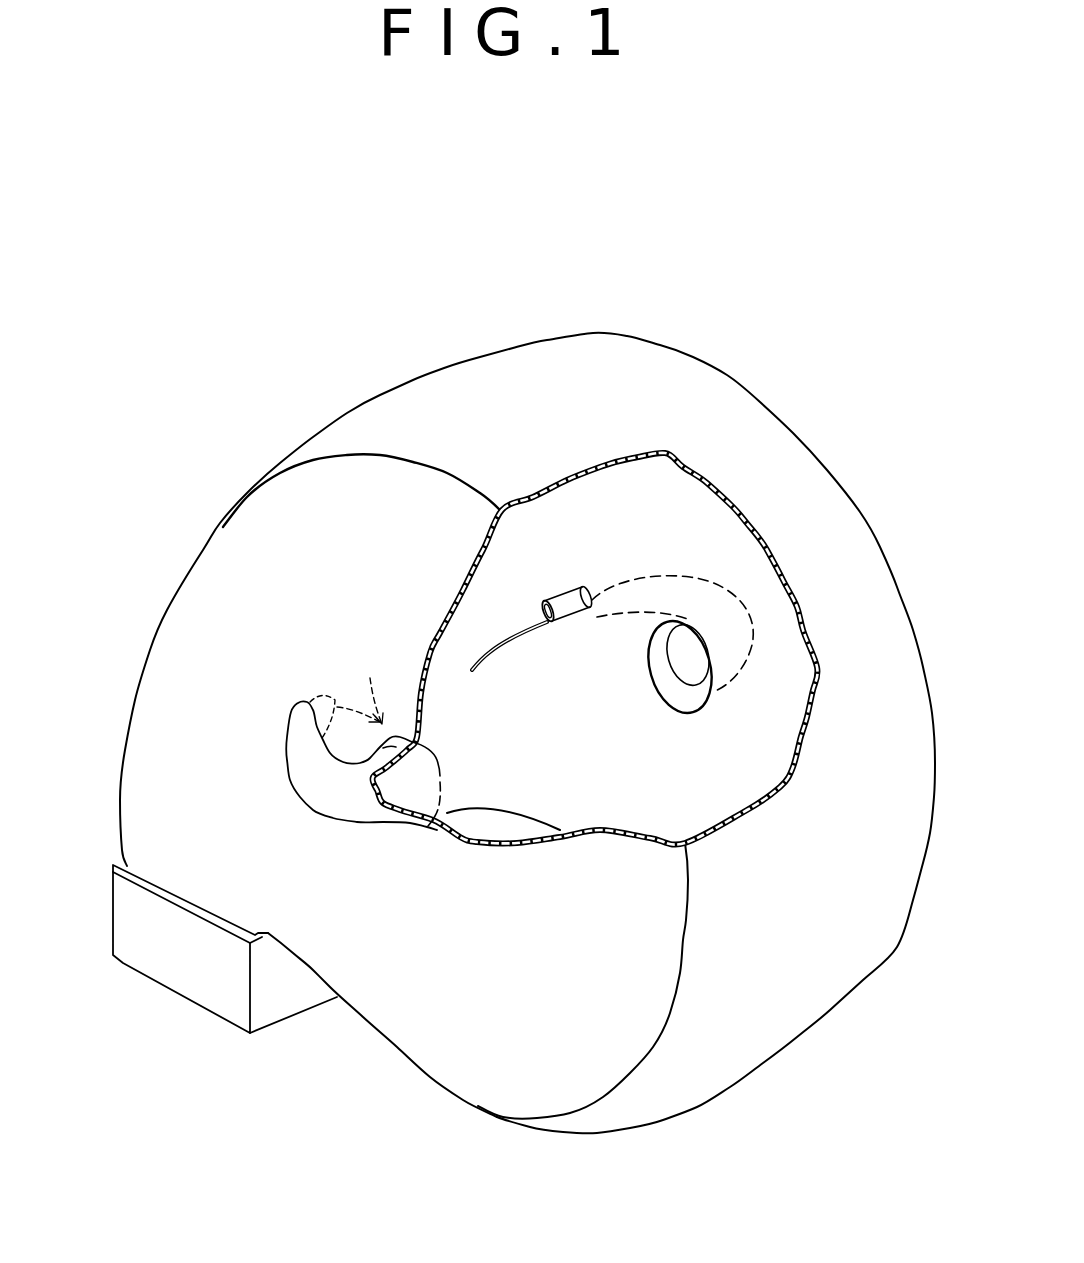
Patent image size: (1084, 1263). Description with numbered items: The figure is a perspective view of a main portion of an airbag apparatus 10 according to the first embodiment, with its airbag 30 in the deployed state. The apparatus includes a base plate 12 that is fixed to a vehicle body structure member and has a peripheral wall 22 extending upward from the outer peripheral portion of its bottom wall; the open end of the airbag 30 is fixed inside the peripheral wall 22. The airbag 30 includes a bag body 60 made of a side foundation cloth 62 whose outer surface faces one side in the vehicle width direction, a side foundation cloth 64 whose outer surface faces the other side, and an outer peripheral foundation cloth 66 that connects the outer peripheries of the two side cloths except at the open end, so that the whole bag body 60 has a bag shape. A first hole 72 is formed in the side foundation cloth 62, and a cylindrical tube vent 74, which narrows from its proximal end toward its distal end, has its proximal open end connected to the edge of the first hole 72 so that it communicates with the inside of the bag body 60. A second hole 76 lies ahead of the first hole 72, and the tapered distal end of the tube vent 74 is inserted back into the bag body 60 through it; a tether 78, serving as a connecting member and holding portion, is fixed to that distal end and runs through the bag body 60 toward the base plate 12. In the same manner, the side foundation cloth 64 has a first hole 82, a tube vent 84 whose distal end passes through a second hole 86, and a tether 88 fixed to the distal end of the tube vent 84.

The airbag apparatus 10 is at (780, 354).
The base plate 12 is at (213, 976).
The peripheral wall 22 is at (223, 998).
The airbag 30 is at (385, 1080).
The bag body 60 is at (471, 377).
The side foundation cloth 62 is at (237, 543).
The side foundation cloth 64 is at (759, 666).
The outer peripheral foundation cloth 66 is at (853, 558).
The first hole 72 is at (413, 745).
The tube vent 74 is at (360, 813).
The second hole 76 is at (295, 716).
The tether 78 is at (364, 679).
The first hole 82 is at (667, 718).
The tube vent 84 is at (569, 620).
The second hole 86 is at (597, 600).
The tether 88 is at (500, 648).